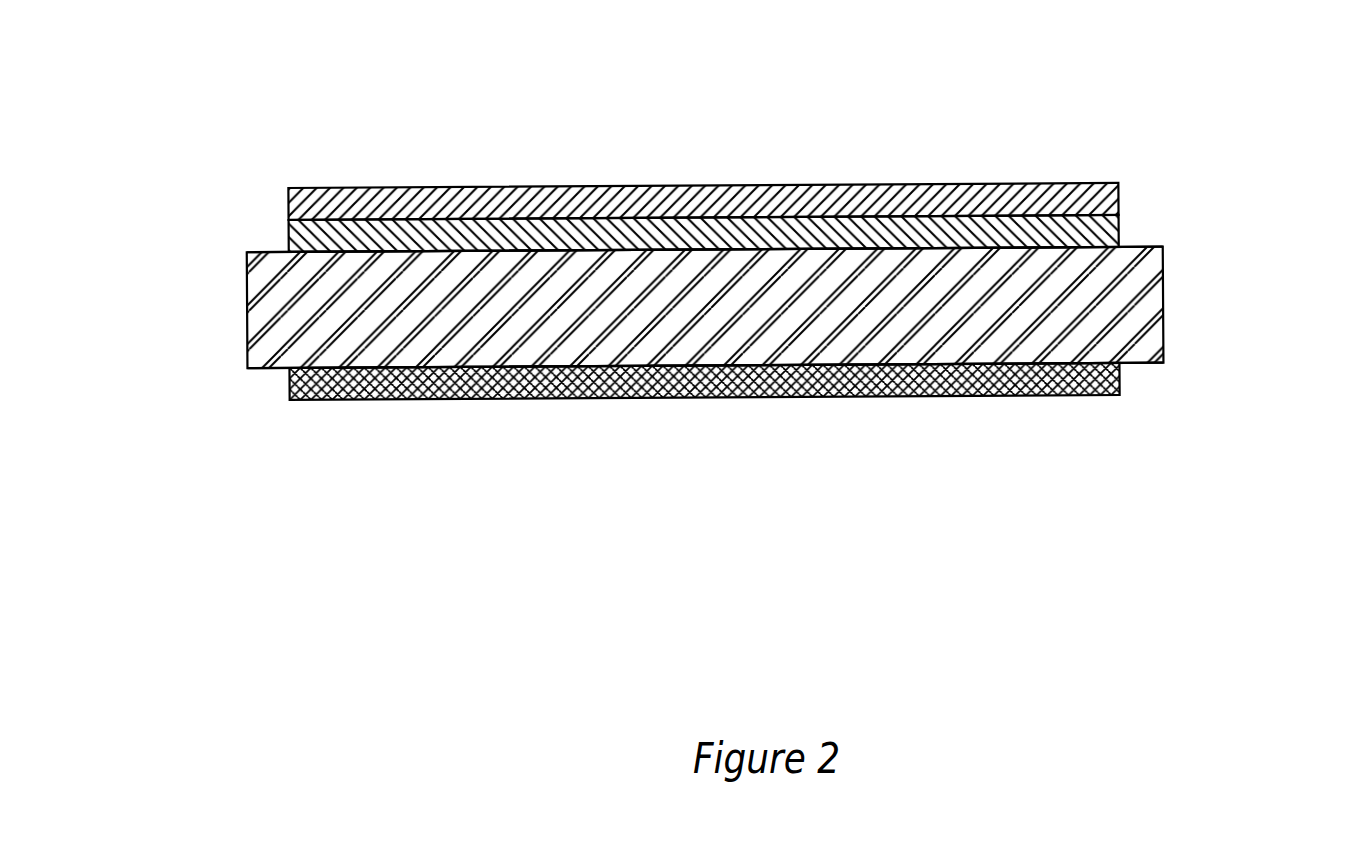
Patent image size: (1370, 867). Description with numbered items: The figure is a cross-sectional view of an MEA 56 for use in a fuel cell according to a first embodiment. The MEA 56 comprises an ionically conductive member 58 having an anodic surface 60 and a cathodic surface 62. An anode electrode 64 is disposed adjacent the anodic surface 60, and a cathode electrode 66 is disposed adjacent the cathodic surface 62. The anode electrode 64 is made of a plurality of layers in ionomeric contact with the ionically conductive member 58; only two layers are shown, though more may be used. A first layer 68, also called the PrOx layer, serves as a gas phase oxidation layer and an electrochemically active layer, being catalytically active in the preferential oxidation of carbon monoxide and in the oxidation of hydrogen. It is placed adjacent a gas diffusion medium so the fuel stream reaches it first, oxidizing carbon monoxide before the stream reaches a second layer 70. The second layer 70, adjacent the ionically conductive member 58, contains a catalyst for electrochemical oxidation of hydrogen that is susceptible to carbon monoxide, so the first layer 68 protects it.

The MEA 56 is at (1147, 58).
The ionically conductive member 58 is at (232, 298).
The anodic surface 60 is at (270, 253).
The cathodic surface 62 is at (1140, 363).
The anode electrode 64 is at (1234, 247).
The cathode electrode 66 is at (350, 416).
The first layer 68 is at (1120, 197).
The second layer 70 is at (1120, 230).